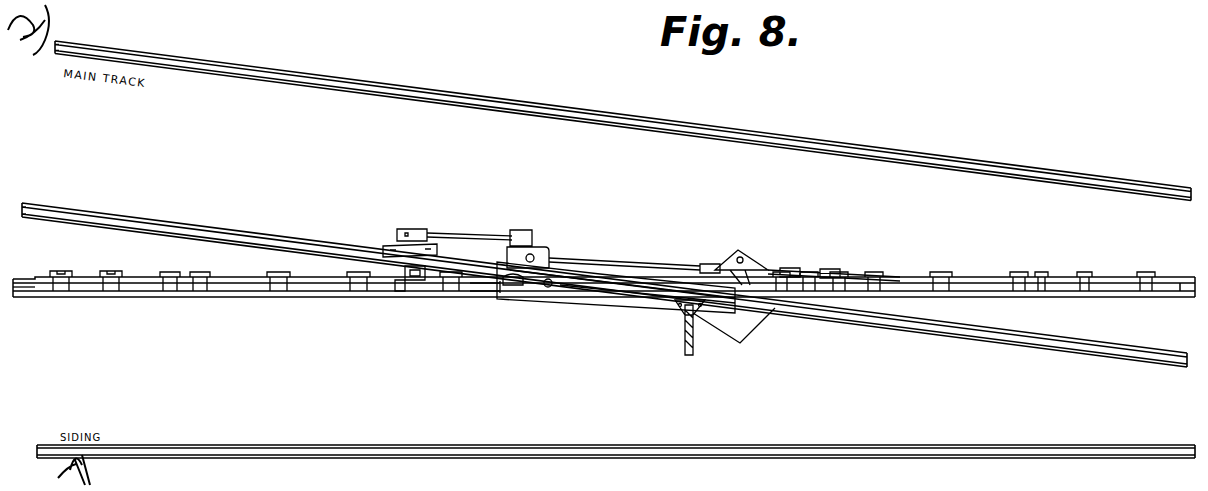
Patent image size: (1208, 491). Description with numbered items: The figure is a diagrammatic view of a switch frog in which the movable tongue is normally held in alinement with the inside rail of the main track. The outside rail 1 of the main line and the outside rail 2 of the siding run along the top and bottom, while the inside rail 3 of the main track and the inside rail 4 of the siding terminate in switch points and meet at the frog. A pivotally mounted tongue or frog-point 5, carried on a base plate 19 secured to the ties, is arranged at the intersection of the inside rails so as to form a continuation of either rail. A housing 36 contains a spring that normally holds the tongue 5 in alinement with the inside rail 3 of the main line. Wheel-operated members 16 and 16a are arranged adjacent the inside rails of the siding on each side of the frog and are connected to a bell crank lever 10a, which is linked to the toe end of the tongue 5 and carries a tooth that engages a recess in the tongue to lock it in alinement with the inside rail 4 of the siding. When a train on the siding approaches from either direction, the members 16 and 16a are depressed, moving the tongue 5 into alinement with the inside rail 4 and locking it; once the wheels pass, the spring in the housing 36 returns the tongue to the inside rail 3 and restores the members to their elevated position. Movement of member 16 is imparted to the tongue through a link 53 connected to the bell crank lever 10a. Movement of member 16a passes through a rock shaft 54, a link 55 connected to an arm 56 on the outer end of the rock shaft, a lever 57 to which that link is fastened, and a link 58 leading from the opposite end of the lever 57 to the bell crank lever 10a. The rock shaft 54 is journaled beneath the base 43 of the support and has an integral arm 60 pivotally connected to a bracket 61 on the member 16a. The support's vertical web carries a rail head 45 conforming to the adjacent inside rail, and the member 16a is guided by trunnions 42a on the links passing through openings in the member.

The outside rail of the main line or track 1 is at (446, 92).
The outside rail of the side track 2 is at (441, 445).
The inside rail of the main track 3 is at (1116, 356).
The inside rail of the siding 4 is at (604, 290).
The movable tongue or frog-point 5 is at (619, 297).
The bell crank lever 10a is at (745, 262).
The wheel-operated member 16 is at (963, 283).
The wheel-operated member 16a is at (326, 288).
The base plate 19 is at (748, 327).
The housing 36 is at (685, 330).
The trunnions 42a is at (115, 277).
The base 43 is at (250, 298).
The rail head 45 is at (48, 287).
The link 53 is at (806, 280).
The rock shaft 54 is at (380, 254).
The link 55 is at (478, 227).
The arm 56 is at (414, 228).
The lever 57 is at (533, 240).
The link 58 is at (656, 267).
The arm 60 is at (415, 281).
The bracket 61 is at (400, 282).